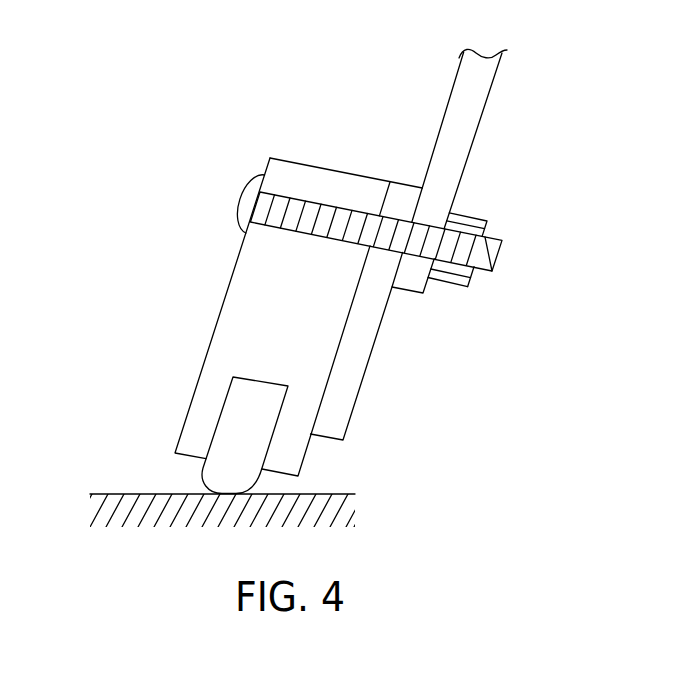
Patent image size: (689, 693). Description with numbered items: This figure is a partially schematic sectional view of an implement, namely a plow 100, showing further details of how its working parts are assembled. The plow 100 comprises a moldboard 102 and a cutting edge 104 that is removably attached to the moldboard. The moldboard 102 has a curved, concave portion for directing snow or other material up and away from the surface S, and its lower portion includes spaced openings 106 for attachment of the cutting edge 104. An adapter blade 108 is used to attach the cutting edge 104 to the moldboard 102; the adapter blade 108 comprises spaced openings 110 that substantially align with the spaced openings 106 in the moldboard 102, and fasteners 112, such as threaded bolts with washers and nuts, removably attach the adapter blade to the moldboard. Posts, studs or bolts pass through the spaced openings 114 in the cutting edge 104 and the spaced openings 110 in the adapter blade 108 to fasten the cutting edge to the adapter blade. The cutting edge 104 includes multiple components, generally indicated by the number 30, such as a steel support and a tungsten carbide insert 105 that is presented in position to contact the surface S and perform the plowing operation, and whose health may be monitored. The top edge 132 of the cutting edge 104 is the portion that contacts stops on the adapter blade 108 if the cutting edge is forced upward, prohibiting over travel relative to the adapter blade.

The plow 100 is at (240, 122).
The moldboard 102 is at (458, 73).
The cutting edge 104 is at (226, 328).
The tungsten carbide insert 105 is at (212, 488).
The spaced openings 106 is at (428, 286).
The adapter blade 108 is at (347, 378).
The spaced openings 110 is at (402, 205).
The fasteners 112 is at (238, 201).
The spaced openings 114 is at (293, 188).
The top edge 132 is at (327, 168).
The components of the cutting edge 30 is at (242, 430).
The surface S is at (333, 493).